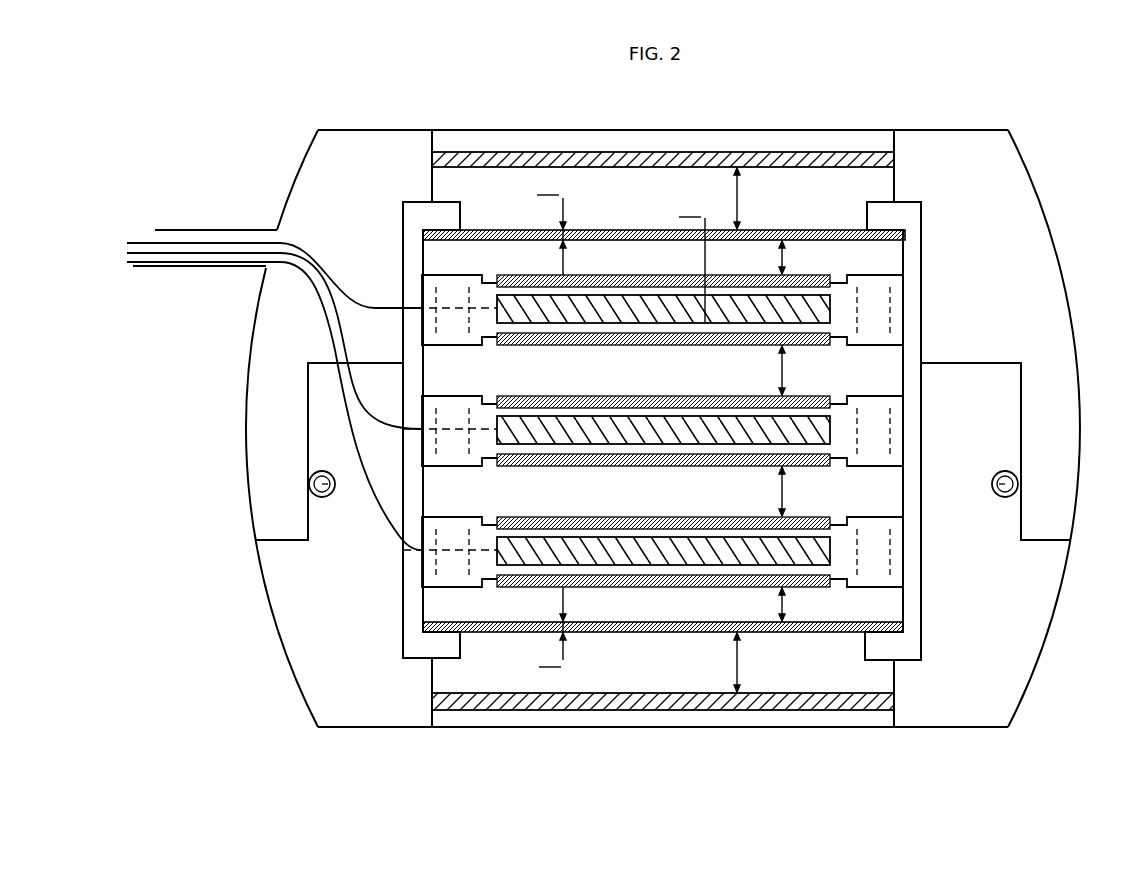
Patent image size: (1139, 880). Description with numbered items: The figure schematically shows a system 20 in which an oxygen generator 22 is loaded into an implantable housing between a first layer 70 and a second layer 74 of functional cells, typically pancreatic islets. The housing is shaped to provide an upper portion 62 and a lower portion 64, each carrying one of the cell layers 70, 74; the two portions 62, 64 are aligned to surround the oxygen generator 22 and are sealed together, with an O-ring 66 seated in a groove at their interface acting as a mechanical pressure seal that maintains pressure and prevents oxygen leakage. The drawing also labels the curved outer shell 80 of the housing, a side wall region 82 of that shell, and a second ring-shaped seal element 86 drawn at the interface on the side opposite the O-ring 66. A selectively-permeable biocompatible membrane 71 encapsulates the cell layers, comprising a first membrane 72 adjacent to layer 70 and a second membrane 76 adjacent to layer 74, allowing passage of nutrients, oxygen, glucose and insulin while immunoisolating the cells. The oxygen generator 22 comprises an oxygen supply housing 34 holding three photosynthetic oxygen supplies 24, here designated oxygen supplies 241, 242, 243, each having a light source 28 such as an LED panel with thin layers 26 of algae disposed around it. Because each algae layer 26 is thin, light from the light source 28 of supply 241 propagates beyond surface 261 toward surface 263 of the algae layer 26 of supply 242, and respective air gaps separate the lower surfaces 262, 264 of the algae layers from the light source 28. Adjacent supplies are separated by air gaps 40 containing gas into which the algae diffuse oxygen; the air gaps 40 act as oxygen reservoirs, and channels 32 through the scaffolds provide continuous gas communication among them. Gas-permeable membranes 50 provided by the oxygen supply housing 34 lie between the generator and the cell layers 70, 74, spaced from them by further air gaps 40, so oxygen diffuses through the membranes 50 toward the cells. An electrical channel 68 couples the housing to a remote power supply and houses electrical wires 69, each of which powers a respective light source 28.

The system 20 is at (450, 106).
The oxygen generator 22 is at (395, 602).
The photosynthetic oxygen supply 24 is at (420, 288).
The layer of algae 26 is at (735, 346).
The light source 28 is at (567, 345).
The channel 32 is at (860, 287).
The oxygen supply housing 34 is at (414, 643).
The air gap 40 is at (636, 200).
The gas-permeable membrane 50 is at (613, 229).
The upper portion 62 is at (270, 332).
The lower portion 64 is at (268, 562).
The O-ring 66 is at (308, 482).
The electrical channel 68 is at (205, 229).
The electrical wire 69 is at (137, 267).
The first layer of functional cells 70 is at (542, 151).
The selectively-permeable biocompatible membrane 71 is at (663, 431).
The first membrane 72 is at (620, 129).
The second layer of functional cells 74 is at (518, 711).
The second membrane 76 is at (616, 728).
The housing shell 80 is at (302, 163).
The housing side wall 82 is at (1056, 320).
The sensor 86 is at (1019, 486).
The oxygen supply 241 is at (908, 312).
The oxygen supply 242 is at (908, 440).
The oxygen supply 243 is at (908, 555).
The surface of algae layer 261 is at (600, 346).
The lower surface of algae layer 262 is at (838, 346).
The surface of algae layer 263 is at (510, 396).
The lower surface of algae layer 264 is at (834, 405).